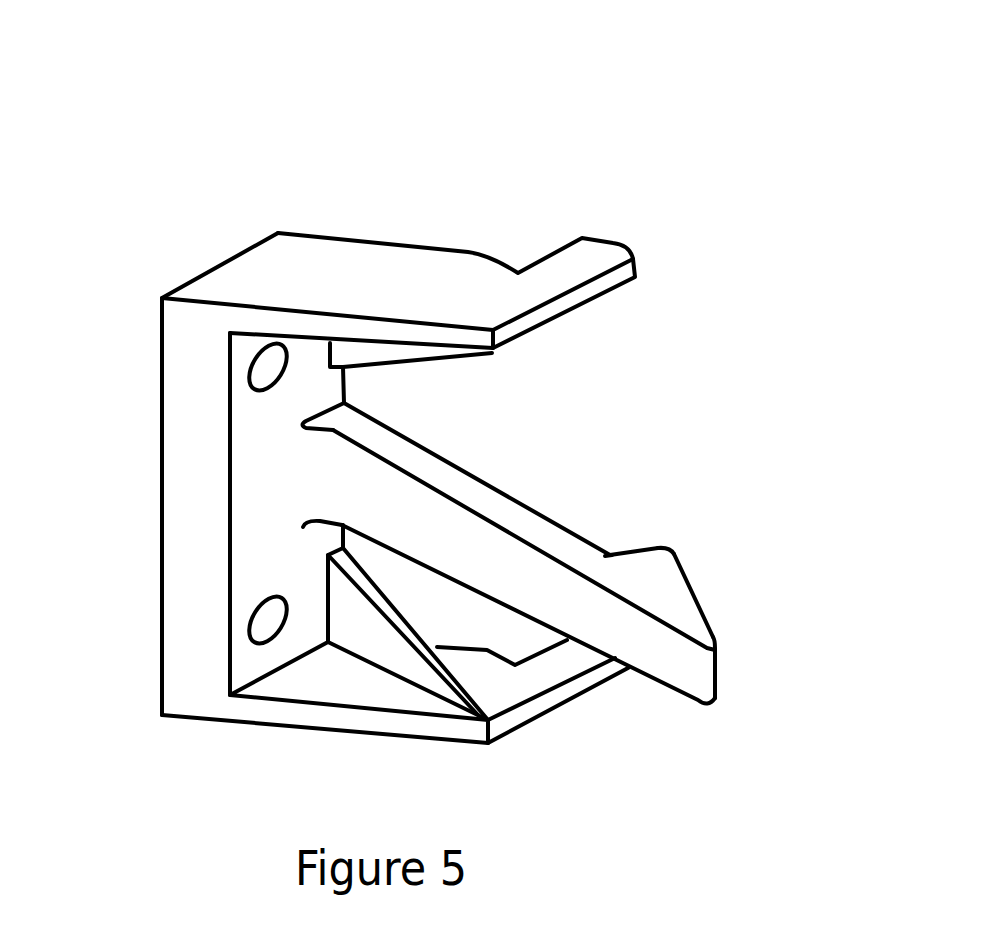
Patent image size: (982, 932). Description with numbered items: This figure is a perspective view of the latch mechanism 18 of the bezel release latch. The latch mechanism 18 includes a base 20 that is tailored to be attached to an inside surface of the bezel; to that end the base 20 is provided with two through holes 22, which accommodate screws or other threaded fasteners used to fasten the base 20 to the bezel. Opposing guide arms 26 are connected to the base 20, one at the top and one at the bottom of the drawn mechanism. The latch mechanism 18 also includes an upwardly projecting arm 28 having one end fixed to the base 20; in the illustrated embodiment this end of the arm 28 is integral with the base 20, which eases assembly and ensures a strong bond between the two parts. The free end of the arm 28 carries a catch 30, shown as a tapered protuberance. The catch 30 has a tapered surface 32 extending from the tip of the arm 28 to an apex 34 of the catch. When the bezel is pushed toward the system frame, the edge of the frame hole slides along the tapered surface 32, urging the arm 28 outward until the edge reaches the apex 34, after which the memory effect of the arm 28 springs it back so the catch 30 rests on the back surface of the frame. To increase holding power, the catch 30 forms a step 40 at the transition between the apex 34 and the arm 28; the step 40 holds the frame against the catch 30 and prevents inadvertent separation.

The latch mechanism 18 is at (508, 157).
The base 20 is at (192, 569).
The through holes 22 is at (263, 370).
The guide arms 26 is at (368, 262).
The arm 28 is at (445, 471).
The catch 30 is at (732, 563).
The tapered surface 32 is at (697, 585).
The apex 34 is at (664, 546).
The step 40 is at (611, 553).